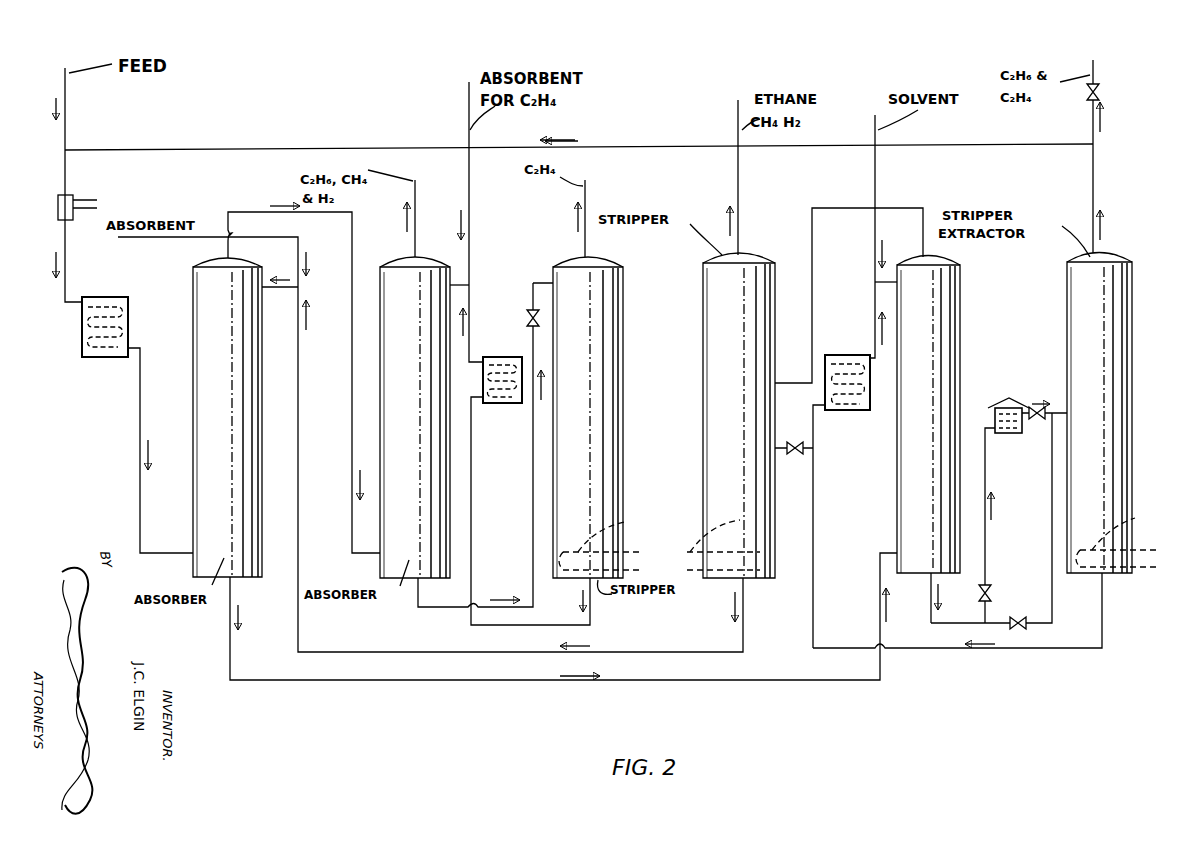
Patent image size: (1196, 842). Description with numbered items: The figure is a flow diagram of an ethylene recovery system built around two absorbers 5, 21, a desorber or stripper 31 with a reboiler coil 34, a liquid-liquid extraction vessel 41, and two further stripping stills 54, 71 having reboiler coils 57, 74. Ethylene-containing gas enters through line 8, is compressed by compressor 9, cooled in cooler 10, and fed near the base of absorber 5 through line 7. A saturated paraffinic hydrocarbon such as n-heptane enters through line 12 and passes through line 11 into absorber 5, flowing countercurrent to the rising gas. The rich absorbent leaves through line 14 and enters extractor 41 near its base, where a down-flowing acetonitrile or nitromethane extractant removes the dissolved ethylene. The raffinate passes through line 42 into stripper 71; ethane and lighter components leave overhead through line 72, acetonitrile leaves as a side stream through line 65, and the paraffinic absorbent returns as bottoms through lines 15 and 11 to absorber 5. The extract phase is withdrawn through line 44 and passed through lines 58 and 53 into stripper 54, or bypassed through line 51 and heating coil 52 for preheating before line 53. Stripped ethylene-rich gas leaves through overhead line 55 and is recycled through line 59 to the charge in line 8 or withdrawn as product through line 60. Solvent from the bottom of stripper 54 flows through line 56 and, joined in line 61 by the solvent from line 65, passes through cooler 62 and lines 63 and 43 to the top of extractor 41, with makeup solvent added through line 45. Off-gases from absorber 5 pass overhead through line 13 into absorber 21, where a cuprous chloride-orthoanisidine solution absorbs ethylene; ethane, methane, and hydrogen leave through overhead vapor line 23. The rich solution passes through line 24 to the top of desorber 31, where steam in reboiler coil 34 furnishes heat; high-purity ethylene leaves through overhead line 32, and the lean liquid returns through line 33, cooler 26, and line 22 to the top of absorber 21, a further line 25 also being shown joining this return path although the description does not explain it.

The absorber 5 is at (193, 318).
The line 7 is at (138, 396).
The line 8 is at (66, 88).
The compressor 9 is at (78, 200).
The cooler 10 is at (82, 312).
The line 11 is at (278, 292).
The line 12 is at (296, 256).
The line 13 is at (262, 212).
The line 14 is at (230, 650).
The line 15 is at (314, 382).
The absorber 21 is at (380, 318).
The line 22 is at (462, 282).
The overhead vapor line 23 is at (413, 195).
The line 24 is at (530, 300).
The absorbent supply line for C2H4 25 is at (470, 196).
The cooler 26 is at (512, 403).
The desorber 31 is at (604, 417).
The overhead line 32 is at (586, 196).
The line 33 is at (472, 556).
The reboiler coil 34 is at (632, 522).
The extraction vessel 41 is at (960, 310).
The line 42 is at (918, 206).
The line 43 is at (882, 280).
The line 44 is at (928, 608).
The line 45 is at (873, 248).
The line 51 is at (986, 555).
The heating coil 52 is at (1002, 404).
The line 53 is at (1058, 410).
The stripper 54 is at (1116, 413).
The overhead vapor line 55 is at (1095, 185).
The line 56 is at (1042, 652).
The reboiler coil 57 is at (1136, 518).
The line 58 is at (1053, 606).
The line 59 is at (152, 150).
The line 60 is at (1093, 74).
The line 61 is at (814, 430).
The cooler 62 is at (852, 355).
The line 63 is at (874, 302).
The line 65 is at (789, 442).
The stripper 71 is at (722, 415).
The line 72 is at (736, 188).
The reboiler coil 74 is at (693, 522).